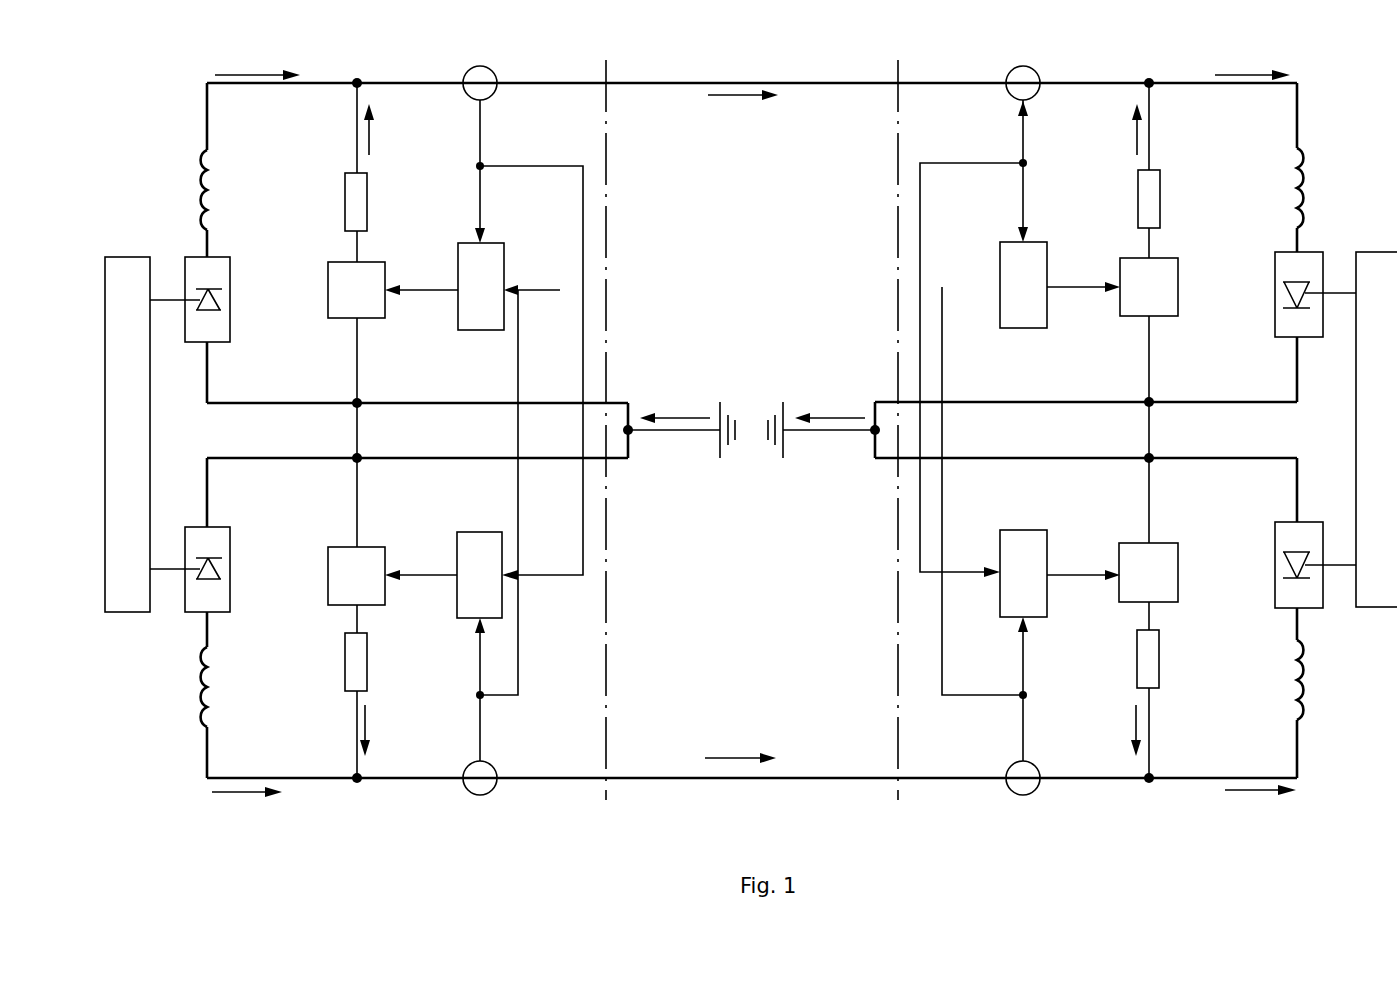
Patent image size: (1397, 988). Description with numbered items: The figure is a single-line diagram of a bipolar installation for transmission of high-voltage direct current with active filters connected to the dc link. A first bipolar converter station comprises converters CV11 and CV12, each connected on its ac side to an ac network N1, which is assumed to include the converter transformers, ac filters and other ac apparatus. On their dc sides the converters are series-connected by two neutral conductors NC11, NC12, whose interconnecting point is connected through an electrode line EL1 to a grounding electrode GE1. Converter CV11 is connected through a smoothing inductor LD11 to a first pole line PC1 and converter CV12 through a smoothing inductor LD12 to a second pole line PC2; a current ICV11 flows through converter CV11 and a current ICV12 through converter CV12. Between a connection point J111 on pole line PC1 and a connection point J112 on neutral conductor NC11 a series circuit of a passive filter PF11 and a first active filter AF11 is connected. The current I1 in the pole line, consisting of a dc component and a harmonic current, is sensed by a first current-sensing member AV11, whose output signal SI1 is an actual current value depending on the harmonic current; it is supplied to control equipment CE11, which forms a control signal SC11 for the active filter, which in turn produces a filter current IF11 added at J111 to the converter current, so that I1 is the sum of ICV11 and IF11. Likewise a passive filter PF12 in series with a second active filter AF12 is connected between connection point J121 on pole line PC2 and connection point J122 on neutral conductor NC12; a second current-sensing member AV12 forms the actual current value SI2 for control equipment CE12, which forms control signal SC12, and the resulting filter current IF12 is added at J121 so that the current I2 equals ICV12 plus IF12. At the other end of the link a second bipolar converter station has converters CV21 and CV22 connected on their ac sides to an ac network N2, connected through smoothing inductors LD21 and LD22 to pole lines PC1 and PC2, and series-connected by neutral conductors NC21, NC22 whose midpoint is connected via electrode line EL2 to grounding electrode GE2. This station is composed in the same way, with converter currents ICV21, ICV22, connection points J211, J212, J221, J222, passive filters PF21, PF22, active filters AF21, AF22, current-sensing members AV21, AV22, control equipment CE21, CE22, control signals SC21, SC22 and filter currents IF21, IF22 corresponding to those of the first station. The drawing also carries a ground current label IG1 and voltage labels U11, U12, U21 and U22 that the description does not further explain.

The first pole line PC1 is at (700, 83).
The second pole line PC2 is at (700, 778).
The current in the first pole line I1 is at (743, 107).
The current in the second pole line I2 is at (740, 746).
The smoothing inductor LD11 is at (200, 190).
The smoothing inductor LD12 is at (200, 718).
The smoothing inductor LD21 is at (1305, 188).
The smoothing inductor LD22 is at (1305, 708).
The converter CV11 is at (232, 320).
The converter CV12 is at (232, 537).
The converter CV21 is at (1270, 322).
The converter CV22 is at (1270, 535).
The ac network N1 is at (122, 612).
The ac network N2 is at (1383, 607).
The converter current ICV11 is at (239, 64).
The converter current ICV12 is at (235, 807).
The converter current ICV21 is at (1250, 58).
The converter current ICV22 is at (1254, 805).
The connection point J111 is at (357, 80).
The connection point J112 is at (357, 410).
The connection point J121 is at (357, 784).
The connection point J122 is at (360, 463).
The connection point J211 is at (1152, 80).
The connection point J212 is at (1150, 408).
The connection point J221 is at (1150, 784).
The connection point J222 is at (1149, 463).
The passive filter PF11 is at (345, 195).
The passive filter PF12 is at (345, 672).
The passive filter PF21 is at (1160, 190).
The passive filter PF22 is at (1160, 668).
The filter current IF11 is at (393, 129).
The filter current IF12 is at (391, 730).
The filter current IF21 is at (1112, 129).
The filter current IF22 is at (1110, 730).
The first active filter AF11 is at (328, 304).
The second active filter AF12 is at (328, 562).
The active filter AF21 is at (1178, 305).
The active filter AF22 is at (1178, 562).
The actual current value SI1 is at (751, 340).
The actual current value SI2 is at (751, 524).
The first current-sensing member AV11 is at (470, 70).
The second current-sensing member AV12 is at (468, 792).
The current-sensing member AV21 is at (1032, 70).
The current-sensing member AV22 is at (1032, 792).
The first piece of control equipment CE11 is at (458, 308).
The second piece of control equipment CE12 is at (457, 608).
The control equipment CE21 is at (1110, 312).
The control equipment CE22 is at (1047, 604).
The control signal SC11 is at (472, 477).
The control signal SC12 is at (421, 562).
The control signal SC21 is at (1083, 275).
The control signal SC22 is at (1083, 562).
The neutral conductor NC11 is at (447, 405).
The neutral conductor NC12 is at (550, 456).
The neutral conductor NC21 is at (1058, 405).
The neutral conductor NC22 is at (958, 456).
The electrode line EL1 is at (683, 430).
The electrode line EL2 is at (805, 430).
The grounding electrode GE1 is at (726, 390).
The grounding electrode GE2 is at (775, 390).
The ground current IG1 is at (752, 407).
The voltage U11 is at (634, 254).
The voltage U12 is at (633, 603).
The voltage U21 is at (869, 254).
The voltage U22 is at (866, 603).